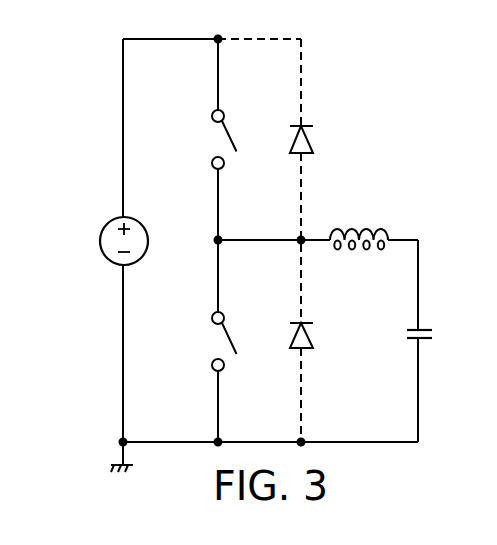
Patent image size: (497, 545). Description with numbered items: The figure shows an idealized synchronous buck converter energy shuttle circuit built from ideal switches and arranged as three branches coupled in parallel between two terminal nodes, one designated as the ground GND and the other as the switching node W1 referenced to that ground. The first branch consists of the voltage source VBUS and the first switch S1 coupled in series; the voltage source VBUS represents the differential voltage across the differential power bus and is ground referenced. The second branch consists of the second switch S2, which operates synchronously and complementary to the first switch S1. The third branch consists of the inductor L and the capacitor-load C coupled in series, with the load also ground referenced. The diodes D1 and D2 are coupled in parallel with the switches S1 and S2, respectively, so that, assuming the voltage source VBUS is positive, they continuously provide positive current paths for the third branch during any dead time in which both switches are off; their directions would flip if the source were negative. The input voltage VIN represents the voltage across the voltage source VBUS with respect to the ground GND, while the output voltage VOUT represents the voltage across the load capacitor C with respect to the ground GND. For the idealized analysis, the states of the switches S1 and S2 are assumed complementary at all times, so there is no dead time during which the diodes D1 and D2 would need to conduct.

The input voltage VIN is at (120, 16).
The voltage source VBUS is at (88, 241).
The first switch S1 is at (212, 139).
The second switch S2 is at (209, 341).
The diode D1 is at (319, 143).
The diode D2 is at (319, 339).
The switching node W1 is at (201, 244).
The inductor L is at (359, 227).
The output voltage VOUT is at (414, 219).
The capacitor-load C is at (431, 336).
The ground GND is at (124, 472).